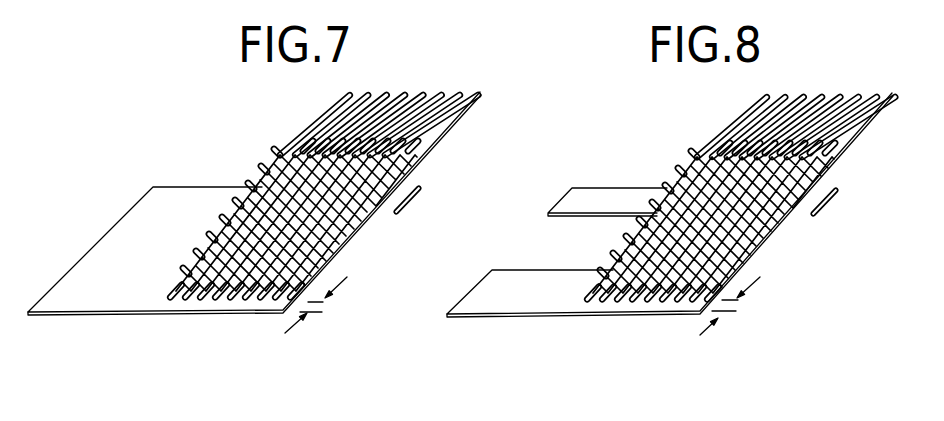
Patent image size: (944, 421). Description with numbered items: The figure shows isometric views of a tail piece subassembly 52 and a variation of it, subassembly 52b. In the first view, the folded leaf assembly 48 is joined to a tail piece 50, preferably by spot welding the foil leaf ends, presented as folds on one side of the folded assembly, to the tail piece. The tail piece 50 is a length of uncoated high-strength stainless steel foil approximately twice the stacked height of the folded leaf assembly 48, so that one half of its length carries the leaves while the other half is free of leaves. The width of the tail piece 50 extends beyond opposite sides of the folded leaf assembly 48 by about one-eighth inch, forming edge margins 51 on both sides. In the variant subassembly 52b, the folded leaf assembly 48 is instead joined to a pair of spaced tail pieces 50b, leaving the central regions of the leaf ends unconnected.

In FIG. 7, the folded leaf assembly 48 is at (373, 177).
In FIG. 8, the folded leaf assembly 48 is at (798, 168).
In FIG. 7, the tail piece 50 is at (128, 300).
In FIG. 7, the edge margins 51 is at (316, 302).
In FIG. 8, the edge margins 51 is at (723, 300).
In FIG. 7, the tail piece subassembly 52 is at (227, 345).
In FIG. 8, the spaced tail pieces 50b is at (557, 280).
In FIG. 8, the tail piece subassembly variant 52b is at (628, 342).